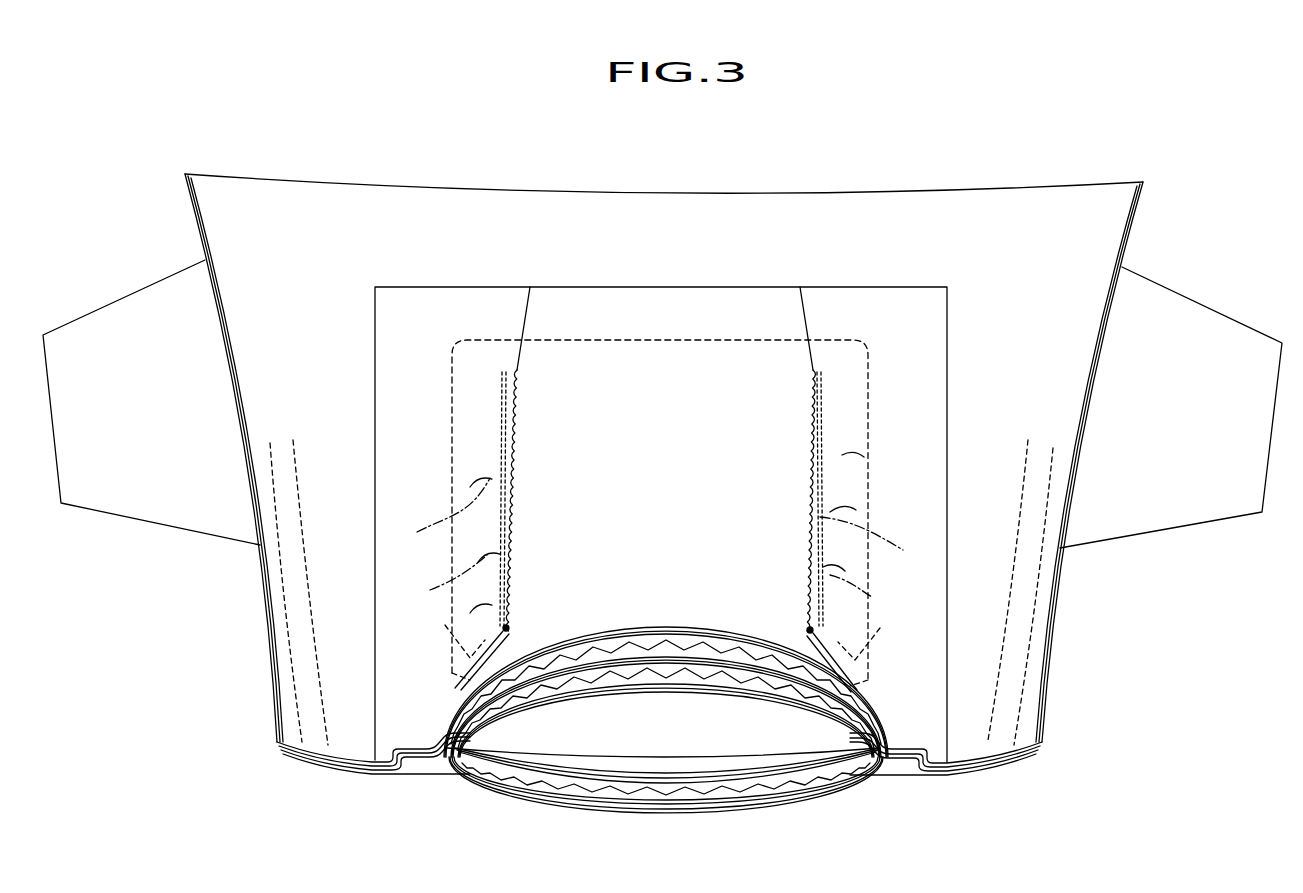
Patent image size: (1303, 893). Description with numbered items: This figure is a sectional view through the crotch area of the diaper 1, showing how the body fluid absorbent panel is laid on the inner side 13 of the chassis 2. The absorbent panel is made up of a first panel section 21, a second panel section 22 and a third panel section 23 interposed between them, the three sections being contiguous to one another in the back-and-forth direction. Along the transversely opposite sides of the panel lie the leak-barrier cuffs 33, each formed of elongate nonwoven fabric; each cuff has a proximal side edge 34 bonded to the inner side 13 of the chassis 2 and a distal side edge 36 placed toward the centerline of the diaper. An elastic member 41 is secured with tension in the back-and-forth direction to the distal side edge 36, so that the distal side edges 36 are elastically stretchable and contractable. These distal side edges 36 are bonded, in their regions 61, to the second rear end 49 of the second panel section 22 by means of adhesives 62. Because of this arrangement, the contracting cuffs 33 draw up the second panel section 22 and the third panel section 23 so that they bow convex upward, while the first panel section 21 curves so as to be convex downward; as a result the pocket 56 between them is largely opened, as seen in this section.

The diaper 1 is at (910, 135).
The chassis 2 is at (1005, 185).
The inner side 13 is at (1093, 227).
The first panel section 21 is at (598, 777).
The second panel section 22 is at (560, 638).
The third panel section 23 is at (538, 712).
The leak-barrier cuffs 33 is at (513, 420).
The proximal side edge 34 is at (935, 625).
The distal side edge 36 is at (490, 515).
The elastic member 41 is at (808, 630).
The second rear end 49 is at (670, 614).
The pocket 56 is at (685, 745).
The regions 61 is at (452, 630).
The adhesives 62 is at (463, 668).